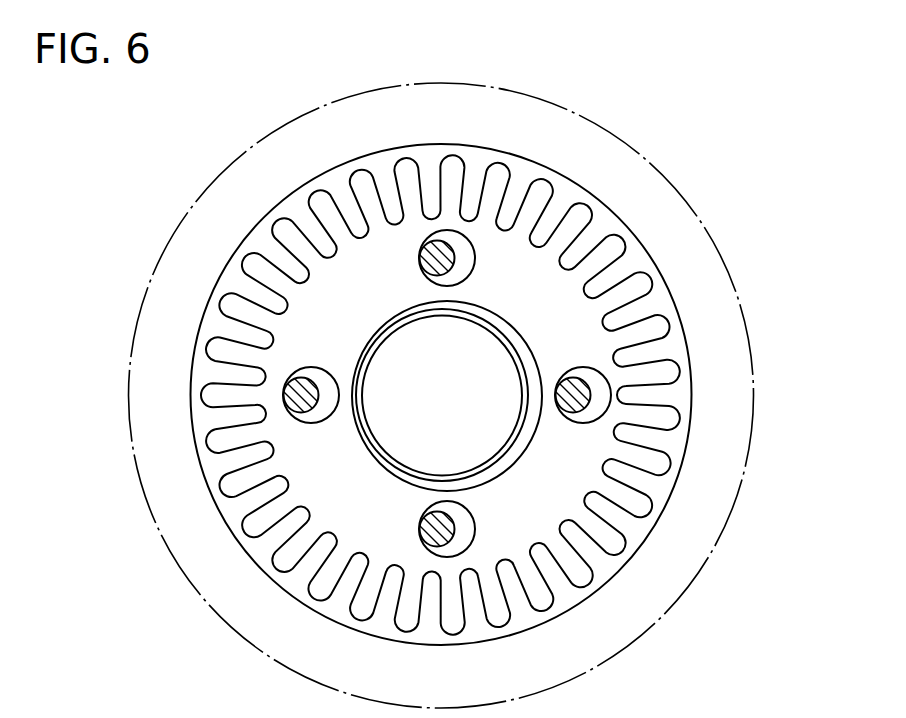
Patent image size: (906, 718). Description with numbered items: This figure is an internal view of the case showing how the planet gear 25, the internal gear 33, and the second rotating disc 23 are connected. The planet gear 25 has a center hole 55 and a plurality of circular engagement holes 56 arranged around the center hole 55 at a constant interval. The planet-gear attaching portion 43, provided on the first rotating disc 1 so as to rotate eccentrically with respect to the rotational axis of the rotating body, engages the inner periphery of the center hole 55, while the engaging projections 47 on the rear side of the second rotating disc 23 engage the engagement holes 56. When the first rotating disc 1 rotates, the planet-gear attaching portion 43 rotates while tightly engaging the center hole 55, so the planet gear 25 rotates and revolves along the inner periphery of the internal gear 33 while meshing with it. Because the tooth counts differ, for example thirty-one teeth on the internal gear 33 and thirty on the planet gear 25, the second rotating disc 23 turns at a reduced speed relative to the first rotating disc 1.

The first rotating disc 1 is at (345, 198).
The second rotating disc 23 is at (172, 233).
The planet gear 25 is at (512, 253).
The internal gear 33 is at (265, 232).
The planet-gear attaching portion 43 is at (463, 315).
The engaging projections 47 is at (423, 241).
The center hole 55 is at (533, 356).
The engagement holes 56 is at (468, 235).